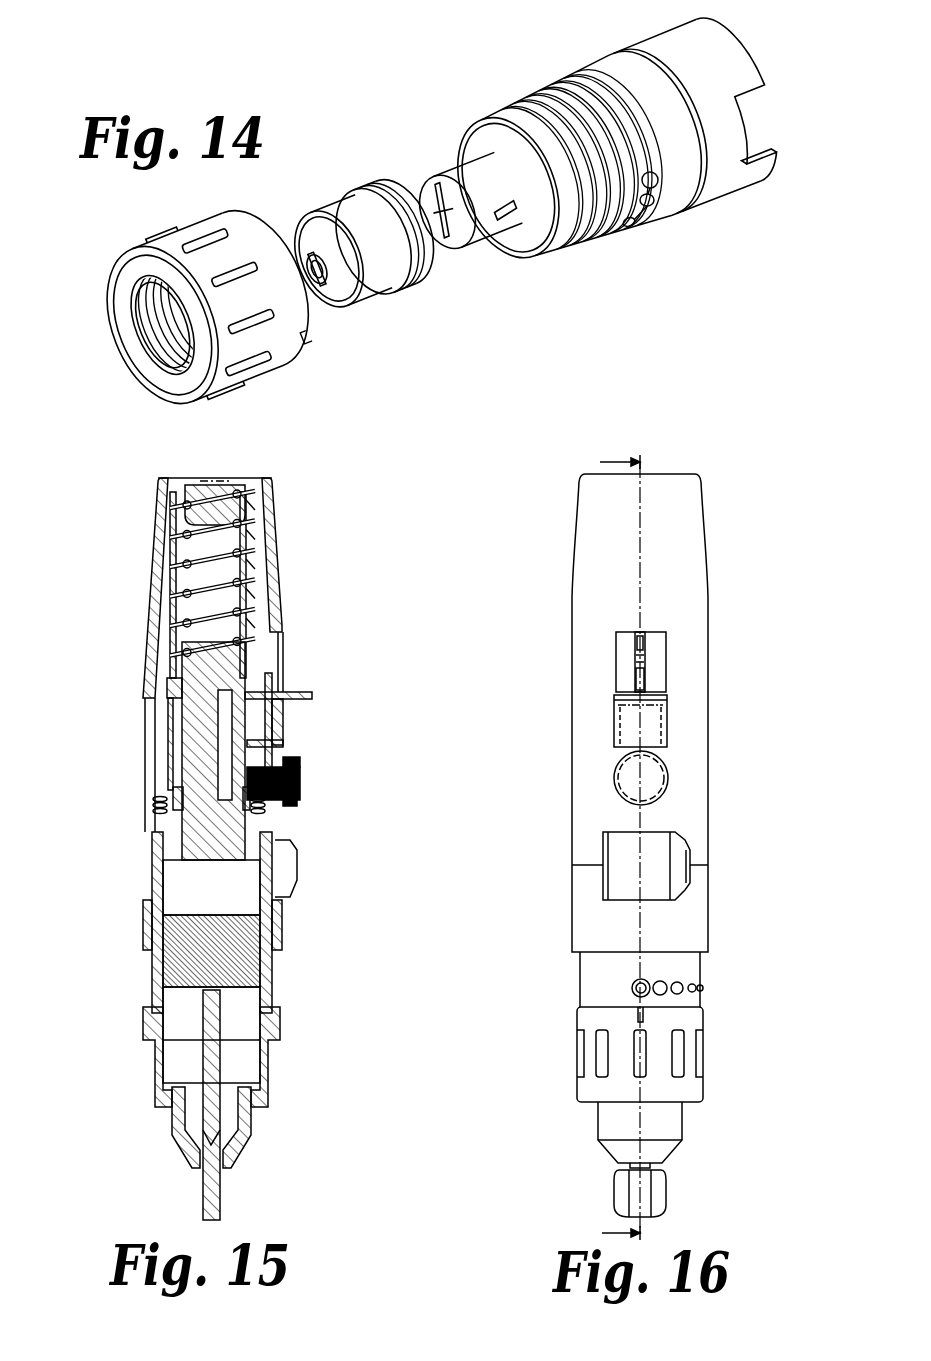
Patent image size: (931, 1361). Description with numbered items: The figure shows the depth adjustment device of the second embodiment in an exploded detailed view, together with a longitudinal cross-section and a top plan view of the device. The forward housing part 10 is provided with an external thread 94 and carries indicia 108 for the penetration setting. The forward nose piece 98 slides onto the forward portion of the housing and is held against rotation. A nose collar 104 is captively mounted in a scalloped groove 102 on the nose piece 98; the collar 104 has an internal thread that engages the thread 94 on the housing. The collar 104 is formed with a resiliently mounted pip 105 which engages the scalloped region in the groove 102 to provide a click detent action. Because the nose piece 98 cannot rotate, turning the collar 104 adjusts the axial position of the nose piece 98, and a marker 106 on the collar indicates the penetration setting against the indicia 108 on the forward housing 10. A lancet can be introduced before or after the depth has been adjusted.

The forward housing part 10 is at (594, 153).
The external thread 94 is at (500, 118).
The forward nose piece 98 is at (382, 234).
The scalloped groove 102 is at (420, 245).
The nose collar 104 is at (218, 382).
The resiliently mounted pip 105 is at (133, 290).
The marker 106 is at (293, 352).
The indicia 108 is at (658, 212).